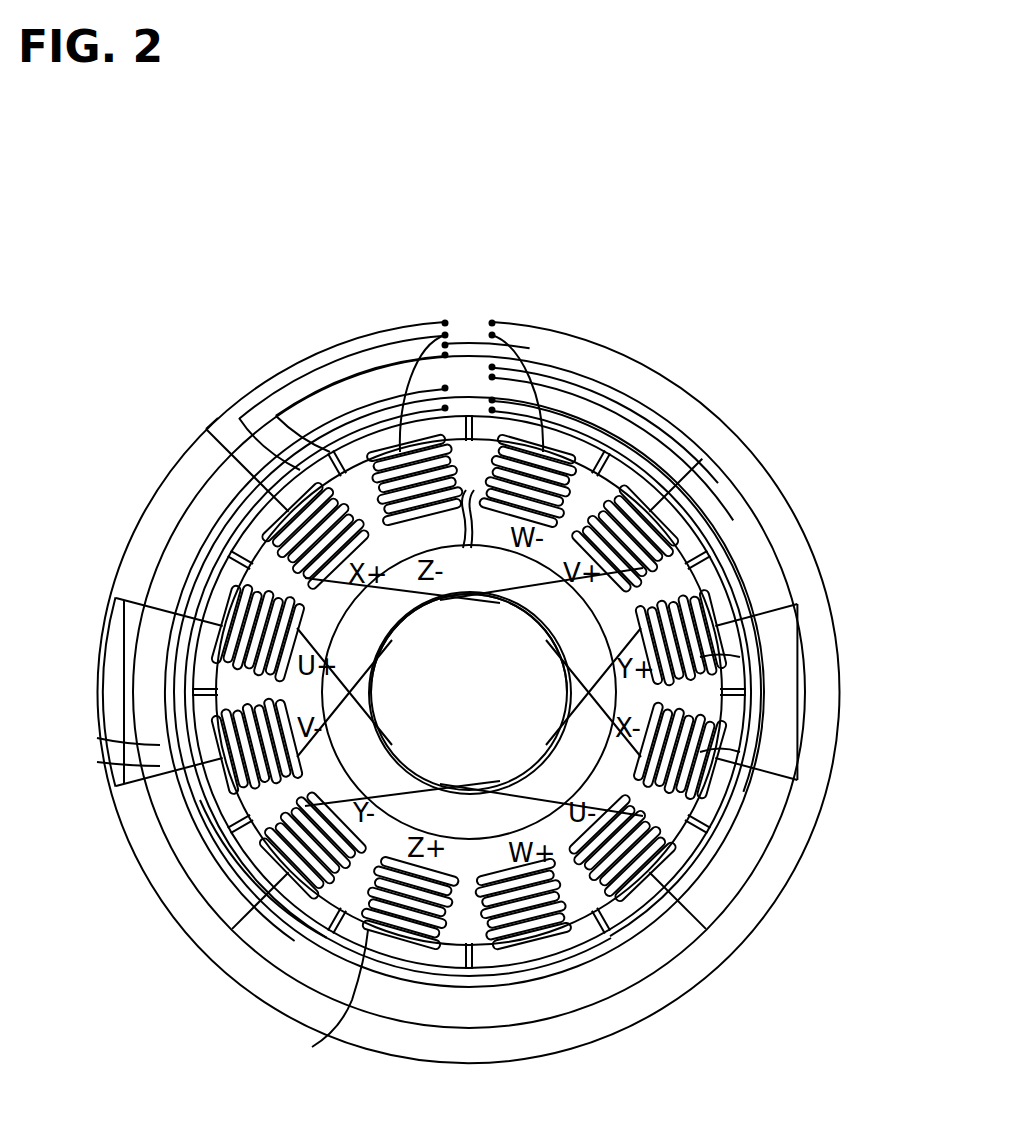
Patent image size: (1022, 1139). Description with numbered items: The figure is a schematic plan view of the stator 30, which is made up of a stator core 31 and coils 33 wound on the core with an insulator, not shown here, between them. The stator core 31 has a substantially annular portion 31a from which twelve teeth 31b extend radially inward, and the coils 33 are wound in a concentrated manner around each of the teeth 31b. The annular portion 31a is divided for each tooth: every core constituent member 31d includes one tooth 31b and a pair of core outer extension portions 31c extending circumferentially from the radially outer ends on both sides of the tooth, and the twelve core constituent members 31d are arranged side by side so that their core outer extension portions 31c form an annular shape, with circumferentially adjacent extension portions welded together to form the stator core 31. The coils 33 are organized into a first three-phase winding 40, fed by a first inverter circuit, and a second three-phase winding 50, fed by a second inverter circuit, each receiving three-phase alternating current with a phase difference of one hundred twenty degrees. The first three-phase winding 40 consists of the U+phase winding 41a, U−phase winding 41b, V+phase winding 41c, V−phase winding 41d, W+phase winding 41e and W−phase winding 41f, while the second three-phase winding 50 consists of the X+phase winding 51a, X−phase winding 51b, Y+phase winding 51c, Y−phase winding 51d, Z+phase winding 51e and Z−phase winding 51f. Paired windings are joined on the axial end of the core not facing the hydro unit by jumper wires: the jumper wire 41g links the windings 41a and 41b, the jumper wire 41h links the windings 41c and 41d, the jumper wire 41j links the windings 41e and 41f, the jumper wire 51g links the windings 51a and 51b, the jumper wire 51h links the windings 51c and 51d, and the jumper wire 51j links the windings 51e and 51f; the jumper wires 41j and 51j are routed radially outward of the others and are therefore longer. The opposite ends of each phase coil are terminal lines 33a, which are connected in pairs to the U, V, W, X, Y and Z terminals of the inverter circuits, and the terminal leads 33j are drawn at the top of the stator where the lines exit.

The stator 30 is at (745, 385).
The stator core 31 is at (723, 583).
The annular portion 31a is at (690, 527).
The teeth 31b is at (600, 480).
The core outer extension portions 31c is at (340, 460).
The core constituent member 31d is at (207, 432).
The coils 33 is at (336, 1040).
The terminal line 33a is at (97, 762).
The lead wire terminals 33j is at (520, 348).
The first three-phase winding 40 is at (600, 455).
The U+phase winding 41a is at (190, 660).
The U−phase winding 41b is at (710, 880).
The V+phase winding 41c is at (670, 480).
The V−phase winding 41d is at (200, 787).
The W+phase winding 41e is at (552, 940).
The W−phase winding 41f is at (543, 467).
The jumper wire 41g is at (383, 740).
The jumper wire 41h is at (403, 623).
The jumper wire 41j is at (543, 578).
The second three-phase winding 50 is at (437, 513).
The X+phase winding 51a is at (303, 520).
The X−phase winding 51b is at (710, 752).
The Y+phase winding 51c is at (727, 657).
The Y−phase winding 51d is at (243, 860).
The Z+phase winding 51e is at (413, 943).
The Z−phase winding 51f is at (323, 452).
The jumper wire 51g is at (550, 640).
The jumper wire 51h is at (547, 733).
The jumper wire 51j is at (400, 817).